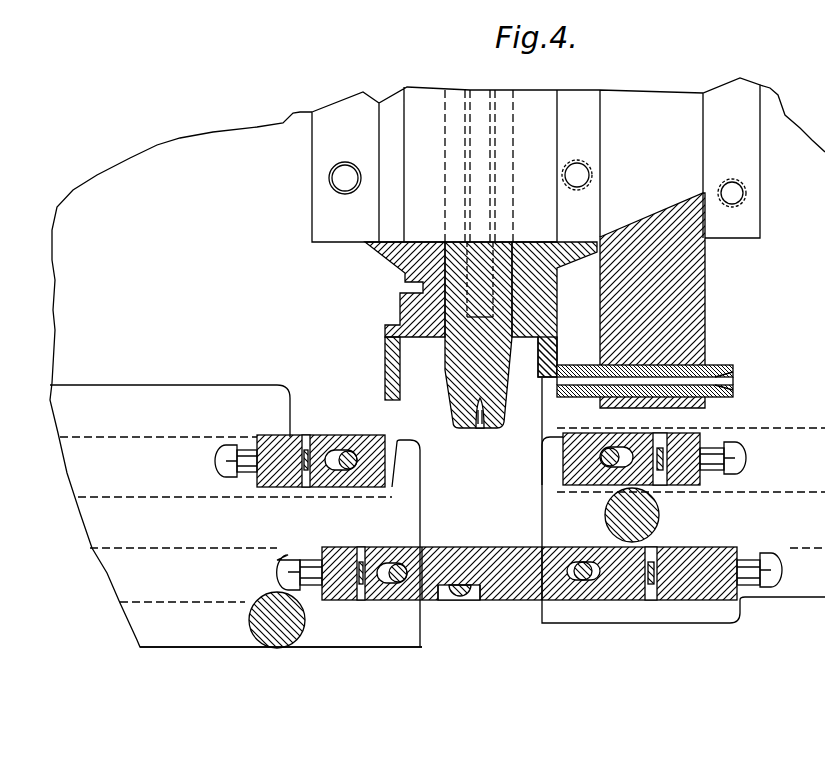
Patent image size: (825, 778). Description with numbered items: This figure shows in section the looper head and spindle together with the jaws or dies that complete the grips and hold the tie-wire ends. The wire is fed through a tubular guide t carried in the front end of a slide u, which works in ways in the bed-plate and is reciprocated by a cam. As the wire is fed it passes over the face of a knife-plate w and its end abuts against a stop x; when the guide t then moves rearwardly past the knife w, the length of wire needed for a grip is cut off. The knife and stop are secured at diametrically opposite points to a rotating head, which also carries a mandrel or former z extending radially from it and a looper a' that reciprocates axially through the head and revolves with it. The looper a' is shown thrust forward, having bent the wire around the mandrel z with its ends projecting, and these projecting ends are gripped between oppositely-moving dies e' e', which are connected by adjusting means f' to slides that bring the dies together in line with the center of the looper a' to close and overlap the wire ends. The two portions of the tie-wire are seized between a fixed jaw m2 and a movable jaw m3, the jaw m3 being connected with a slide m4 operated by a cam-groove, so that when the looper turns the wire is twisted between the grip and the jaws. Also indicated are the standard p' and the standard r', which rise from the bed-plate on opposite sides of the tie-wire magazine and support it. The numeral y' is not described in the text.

The looper a' is at (479, 284).
The collar nut y' is at (474, 309).
The stop x is at (400, 375).
The knife-plate w is at (559, 351).
The slide u is at (706, 290).
The tubular guide t is at (733, 375).
The mandrel z is at (480, 430).
The dies e' is at (478, 444).
The adjusting means f' is at (480, 438).
The standard r' is at (651, 515).
The fixed jaw m2 is at (513, 602).
The movable jaw m3 is at (440, 603).
The slide m4 is at (281, 606).
The standard p' is at (273, 638).